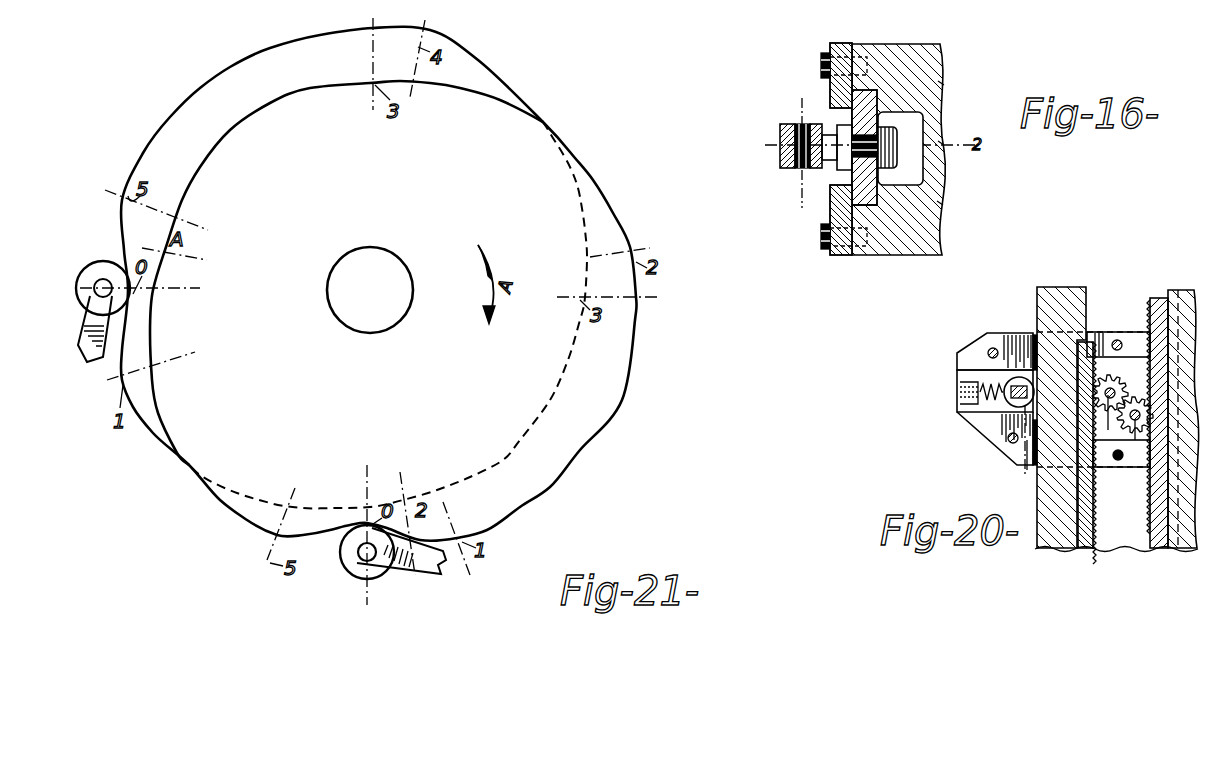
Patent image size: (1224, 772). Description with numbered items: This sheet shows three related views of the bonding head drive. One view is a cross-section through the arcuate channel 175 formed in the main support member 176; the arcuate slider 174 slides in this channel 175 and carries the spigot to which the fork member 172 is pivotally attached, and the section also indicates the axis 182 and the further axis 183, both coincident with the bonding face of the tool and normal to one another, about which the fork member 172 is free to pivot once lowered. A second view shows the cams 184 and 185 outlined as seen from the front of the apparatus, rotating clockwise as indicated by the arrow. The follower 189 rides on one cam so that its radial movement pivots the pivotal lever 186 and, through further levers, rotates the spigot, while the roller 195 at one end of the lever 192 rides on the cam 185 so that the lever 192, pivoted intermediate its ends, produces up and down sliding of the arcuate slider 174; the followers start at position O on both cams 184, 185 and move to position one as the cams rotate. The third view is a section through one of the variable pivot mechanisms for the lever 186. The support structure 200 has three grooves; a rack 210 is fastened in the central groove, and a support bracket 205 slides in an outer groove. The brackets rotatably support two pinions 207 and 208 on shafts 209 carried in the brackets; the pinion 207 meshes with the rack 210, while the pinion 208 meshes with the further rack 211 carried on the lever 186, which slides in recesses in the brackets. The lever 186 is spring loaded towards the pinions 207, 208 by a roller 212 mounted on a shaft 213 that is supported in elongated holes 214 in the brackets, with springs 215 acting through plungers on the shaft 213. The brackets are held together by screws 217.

In FIG. 16, the fork member 172 is at (778, 140).
In FIG. 16, the arcuate slider 174 is at (870, 196).
In FIG. 16, the arcuate channel 175 is at (878, 98).
In FIG. 16, the main support member 176 is at (830, 81).
In FIG. 16, the axis 182 is at (803, 201).
In FIG. 16, the further axis 183 is at (944, 144).
In FIG. 21, the cam 184 is at (379, 284).
In FIG. 21, the cam 185 is at (585, 455).
In FIG. 21, the pivotal lever 186 is at (90, 358).
In FIG. 20, the pivotal lever 186 is at (1060, 288).
In FIG. 21, the follower 189 is at (90, 282).
In FIG. 21, the lever 192 is at (419, 569).
In FIG. 21, the roller 195 is at (353, 568).
In FIG. 20, the support structure 200 is at (1190, 292).
In FIG. 20, the support bracket 205 is at (990, 334).
In FIG. 20, the pinion 207 is at (1136, 398).
In FIG. 20, the pinion 208 is at (1104, 375).
In FIG. 20, the shafts 209 is at (1135, 420).
In FIG. 20, the rack 210 is at (1158, 302).
In FIG. 20, the further rack 211 is at (1083, 550).
In FIG. 20, the roller 212 is at (1010, 400).
In FIG. 20, the shaft 213 is at (1018, 378).
In FIG. 20, the elongated holes 214 is at (1026, 470).
In FIG. 20, the springs 215 is at (975, 418).
In FIG. 20, the screws 217 is at (988, 353).